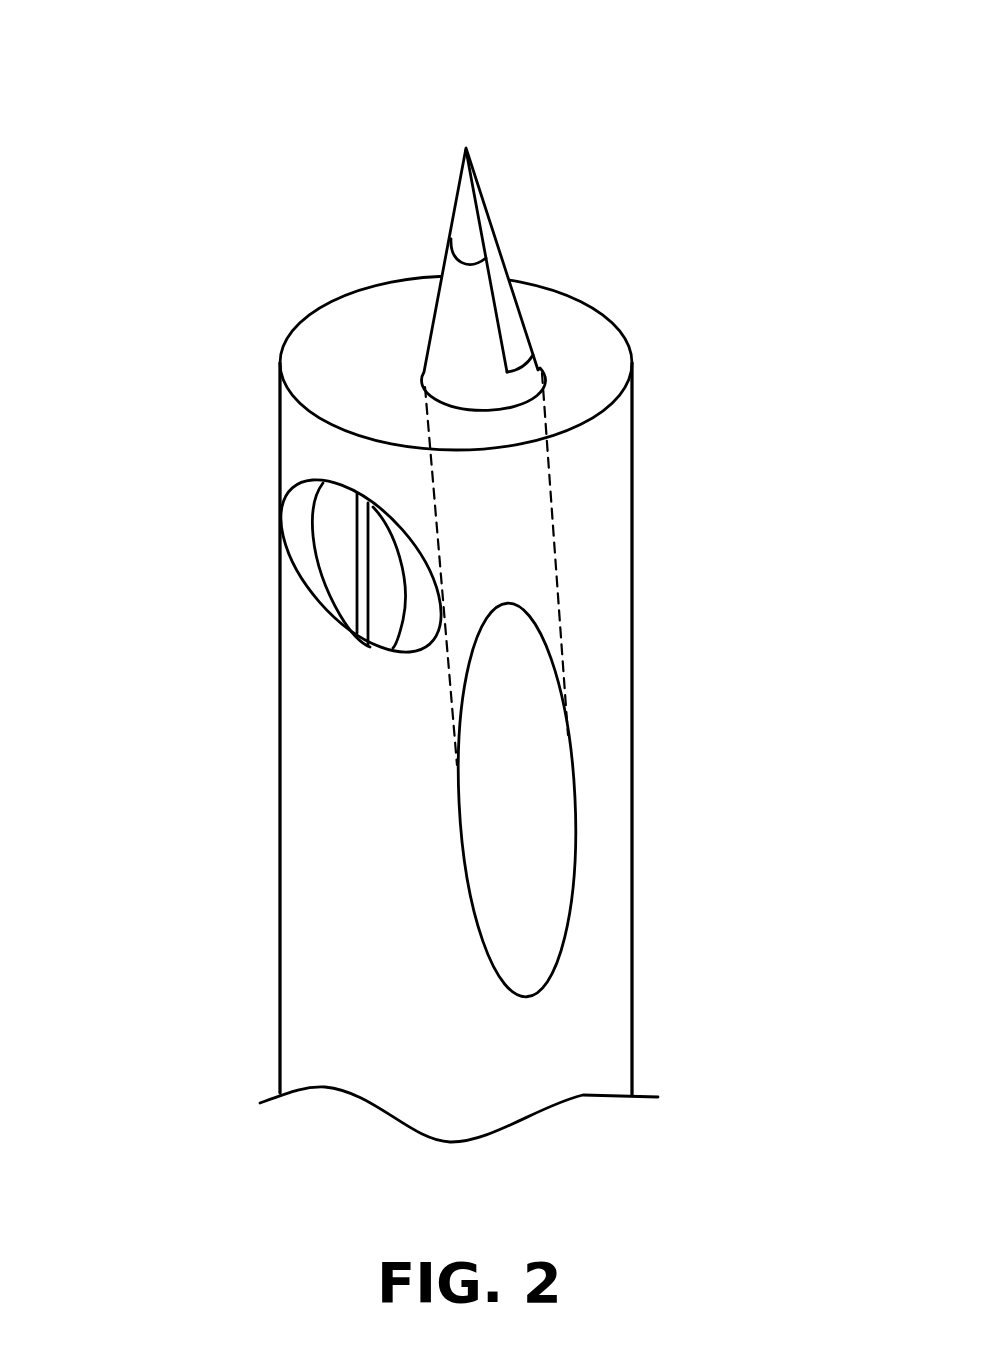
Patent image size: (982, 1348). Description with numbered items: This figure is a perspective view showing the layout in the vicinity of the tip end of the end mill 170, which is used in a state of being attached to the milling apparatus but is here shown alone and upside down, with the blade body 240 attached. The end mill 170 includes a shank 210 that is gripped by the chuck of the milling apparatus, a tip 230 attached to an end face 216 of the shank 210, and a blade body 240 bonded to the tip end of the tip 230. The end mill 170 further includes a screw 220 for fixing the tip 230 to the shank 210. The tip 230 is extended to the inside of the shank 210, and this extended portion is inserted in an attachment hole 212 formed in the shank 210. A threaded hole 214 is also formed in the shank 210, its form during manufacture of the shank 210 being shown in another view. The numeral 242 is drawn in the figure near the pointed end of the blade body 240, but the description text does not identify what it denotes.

The end mill 170 is at (82, 32).
The shank 210 is at (623, 990).
The attachment hole 212 is at (572, 778).
The threaded hole 214 is at (295, 515).
The end face 216 is at (603, 340).
The screw 220 is at (378, 578).
The tip 230 is at (443, 328).
The blade body 240 is at (505, 262).
The tip point 242 is at (453, 210).